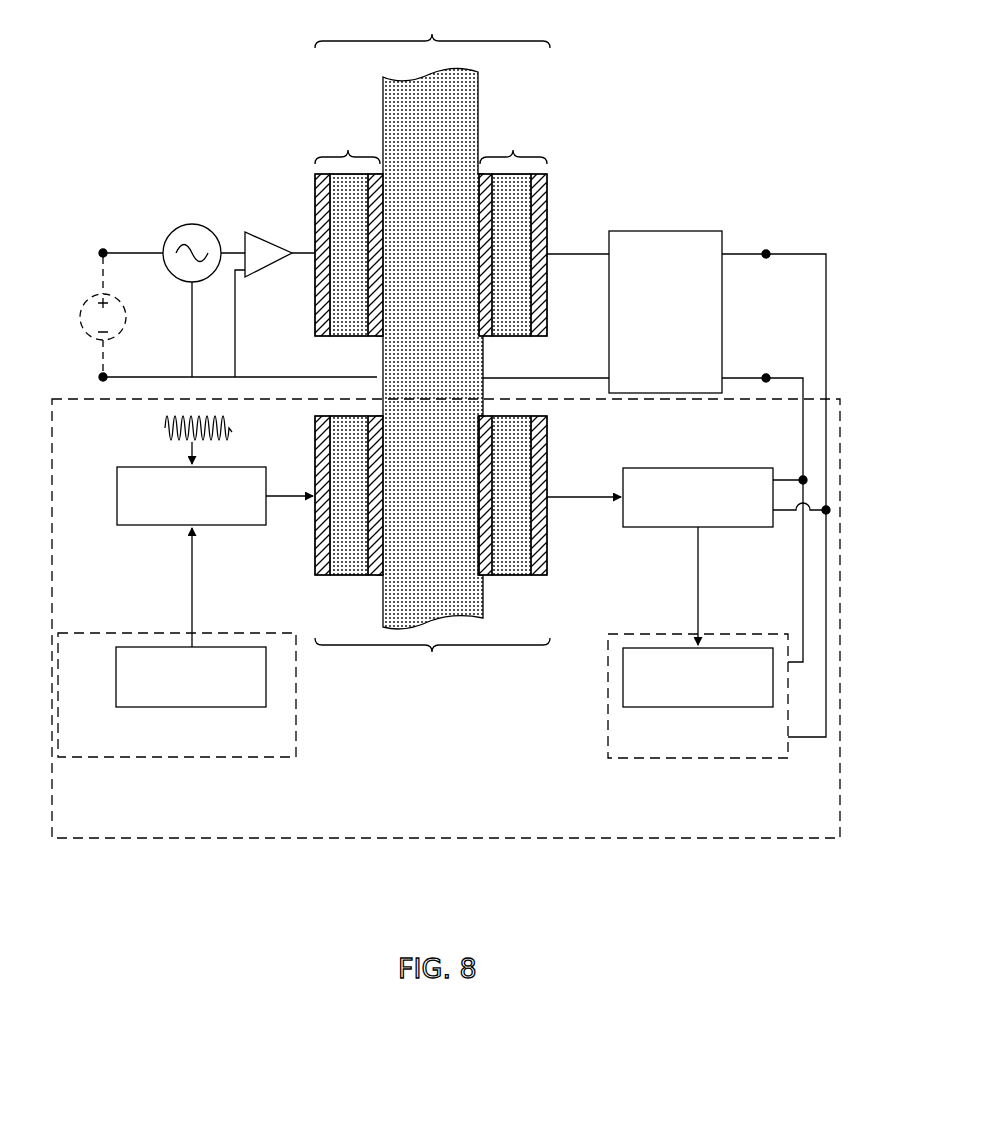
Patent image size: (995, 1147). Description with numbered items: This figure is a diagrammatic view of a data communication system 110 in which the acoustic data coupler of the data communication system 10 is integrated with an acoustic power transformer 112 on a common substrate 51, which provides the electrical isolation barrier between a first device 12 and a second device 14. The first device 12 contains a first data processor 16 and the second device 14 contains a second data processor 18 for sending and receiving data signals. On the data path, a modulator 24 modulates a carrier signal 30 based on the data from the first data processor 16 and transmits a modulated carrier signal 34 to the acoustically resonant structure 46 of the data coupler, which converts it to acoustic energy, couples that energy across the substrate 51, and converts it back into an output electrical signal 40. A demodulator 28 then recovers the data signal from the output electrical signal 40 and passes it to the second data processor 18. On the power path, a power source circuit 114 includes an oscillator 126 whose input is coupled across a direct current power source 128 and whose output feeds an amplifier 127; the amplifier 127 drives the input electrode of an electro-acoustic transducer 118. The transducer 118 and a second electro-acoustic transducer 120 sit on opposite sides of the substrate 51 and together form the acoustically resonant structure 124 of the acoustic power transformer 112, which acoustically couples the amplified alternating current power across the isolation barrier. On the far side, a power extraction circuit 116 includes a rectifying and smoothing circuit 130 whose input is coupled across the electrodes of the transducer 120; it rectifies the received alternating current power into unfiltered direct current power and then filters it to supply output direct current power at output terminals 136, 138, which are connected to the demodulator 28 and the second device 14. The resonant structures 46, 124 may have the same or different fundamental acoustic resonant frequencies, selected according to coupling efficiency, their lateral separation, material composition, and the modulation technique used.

The data communication system 10 is at (335, 840).
The first device 12 is at (177, 716).
The second device 14 is at (698, 701).
The first data processor 16 is at (116, 678).
The second data processor 18 is at (660, 647).
The modulator 24 is at (117, 496).
The demodulator 28 is at (699, 465).
The carrier signal 30 is at (232, 432).
The modulated carrier signal 34 is at (287, 498).
The output electrical signal 40 is at (572, 499).
The acoustically resonant structure 46 is at (370, 648).
The substrate 51 is at (478, 107).
The data communication system 110 is at (169, 135).
The acoustic power transformer 112 is at (468, 231).
The power source circuit 114 is at (213, 289).
The power extraction circuit 116 is at (658, 455).
The electro-acoustic transducer 118 is at (325, 153).
The electro-acoustic transducer 120 is at (530, 152).
The acoustically resonant structure 124 is at (380, 42).
The oscillator 126 is at (182, 223).
The amplifier 127 is at (253, 243).
The direct current power source 128 is at (125, 313).
The rectifying and smoothing circuit 130 is at (667, 231).
The output terminal 136 is at (768, 252).
The output terminal 138 is at (768, 376).